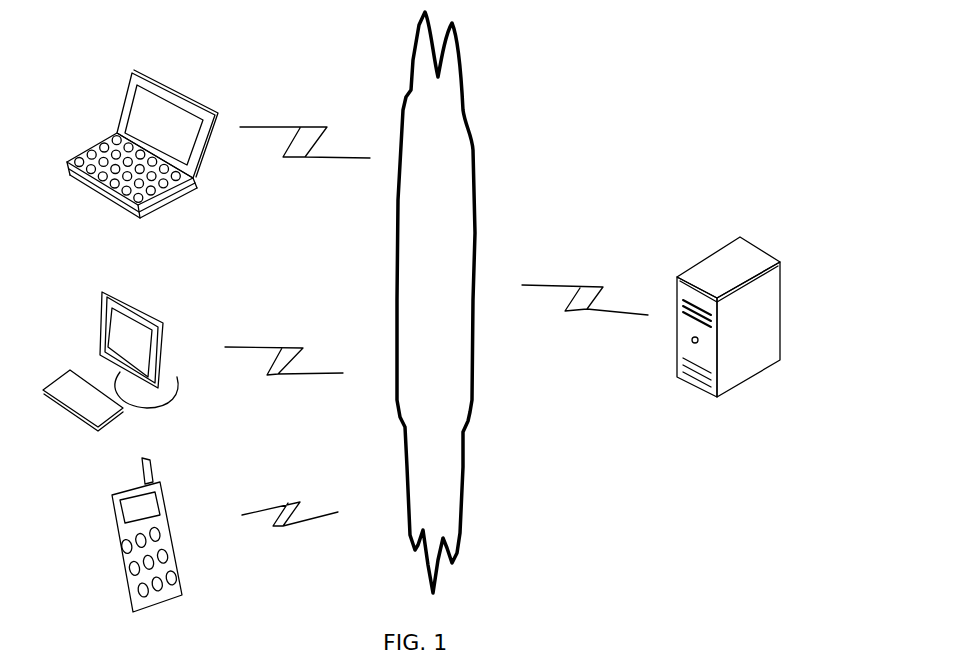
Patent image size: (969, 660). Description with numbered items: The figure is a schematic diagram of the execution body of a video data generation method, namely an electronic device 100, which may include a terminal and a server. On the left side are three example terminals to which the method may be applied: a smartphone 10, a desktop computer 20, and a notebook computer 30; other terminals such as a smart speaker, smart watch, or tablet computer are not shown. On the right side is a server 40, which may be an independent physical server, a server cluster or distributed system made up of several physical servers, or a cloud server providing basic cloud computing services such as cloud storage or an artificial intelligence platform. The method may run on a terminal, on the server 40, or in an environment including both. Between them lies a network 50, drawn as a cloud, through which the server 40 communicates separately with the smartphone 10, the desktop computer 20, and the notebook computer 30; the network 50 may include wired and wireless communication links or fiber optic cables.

The smartphone 10 is at (169, 535).
The desktop computer 20 is at (130, 361).
The notebook computer 30 is at (159, 144).
The server 40 is at (725, 314).
The network 50 is at (436, 302).
The electronic device 100 is at (745, 29).